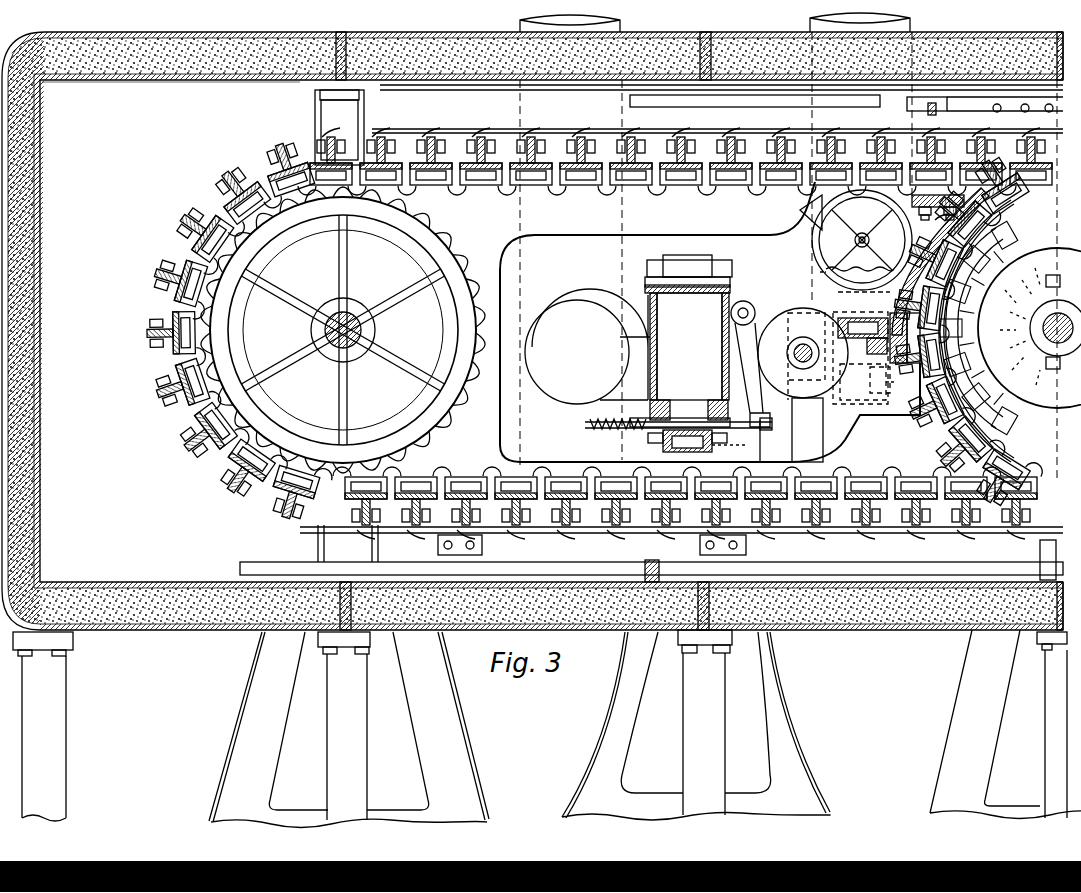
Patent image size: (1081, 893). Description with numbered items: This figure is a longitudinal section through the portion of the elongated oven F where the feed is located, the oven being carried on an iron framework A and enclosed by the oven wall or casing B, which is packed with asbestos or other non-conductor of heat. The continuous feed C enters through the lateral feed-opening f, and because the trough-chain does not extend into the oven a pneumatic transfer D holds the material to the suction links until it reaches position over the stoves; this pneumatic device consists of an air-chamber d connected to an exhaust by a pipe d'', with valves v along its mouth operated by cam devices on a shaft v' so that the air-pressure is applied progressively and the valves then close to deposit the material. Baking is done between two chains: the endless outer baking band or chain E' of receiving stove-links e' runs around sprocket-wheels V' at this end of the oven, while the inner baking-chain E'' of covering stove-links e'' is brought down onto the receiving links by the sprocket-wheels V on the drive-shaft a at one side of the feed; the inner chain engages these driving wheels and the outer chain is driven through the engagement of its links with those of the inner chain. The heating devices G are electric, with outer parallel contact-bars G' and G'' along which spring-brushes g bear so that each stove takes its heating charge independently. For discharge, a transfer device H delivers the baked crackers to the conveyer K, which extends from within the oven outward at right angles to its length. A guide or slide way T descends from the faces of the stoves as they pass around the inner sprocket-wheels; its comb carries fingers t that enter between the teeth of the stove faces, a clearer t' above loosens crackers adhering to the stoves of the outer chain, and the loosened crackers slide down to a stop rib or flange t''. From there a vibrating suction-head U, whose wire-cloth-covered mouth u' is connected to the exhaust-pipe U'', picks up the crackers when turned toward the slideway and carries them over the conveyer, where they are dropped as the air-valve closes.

The framework A is at (547, 729).
The oven wall or casing B is at (532, 346).
The oven F is at (270, 331).
The exhaust-pipe U'' is at (730, 19).
The heating devices G is at (689, 125).
The outer contact-bar G' is at (651, 339).
The outer contact-bar G'' is at (979, 327).
The endless outer baking band or chain E' is at (599, 331).
The inner baking-chain E'' is at (967, 334).
The receiving stove-link e' is at (546, 332).
The covering stove-link e'' is at (976, 333).
The spring-brushes g is at (584, 337).
The sprocket-wheels V' is at (343, 330).
The sprocket-wheels V is at (1029, 328).
The driving-shaft a is at (1040, 326).
The feed-opening f is at (710, 322).
The air-chamber d is at (688, 337).
The pipe d'' is at (587, 329).
The valves v is at (678, 415).
The shaft v' is at (803, 385).
The continuous feed C is at (706, 444).
The pneumatic transfer D is at (750, 351).
The suction-head U is at (850, 240).
The wire-cloth-covered mouth u' is at (850, 274).
The transfer device for the discharge H is at (858, 294).
The guide or slide way T is at (939, 275).
The fingers t is at (938, 200).
The clearer t' is at (942, 222).
The stop rib or flange t'' is at (860, 358).
The conveyer K is at (876, 382).